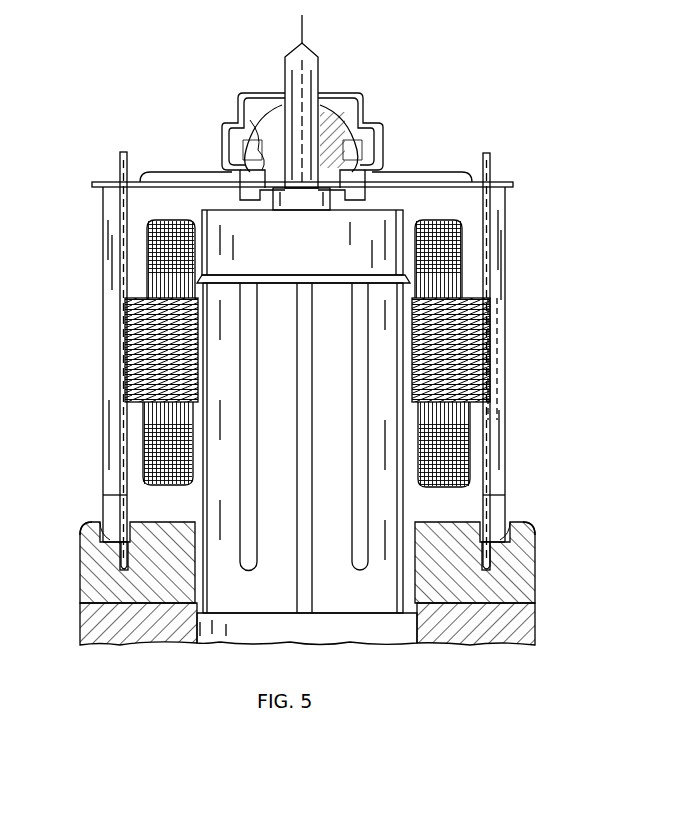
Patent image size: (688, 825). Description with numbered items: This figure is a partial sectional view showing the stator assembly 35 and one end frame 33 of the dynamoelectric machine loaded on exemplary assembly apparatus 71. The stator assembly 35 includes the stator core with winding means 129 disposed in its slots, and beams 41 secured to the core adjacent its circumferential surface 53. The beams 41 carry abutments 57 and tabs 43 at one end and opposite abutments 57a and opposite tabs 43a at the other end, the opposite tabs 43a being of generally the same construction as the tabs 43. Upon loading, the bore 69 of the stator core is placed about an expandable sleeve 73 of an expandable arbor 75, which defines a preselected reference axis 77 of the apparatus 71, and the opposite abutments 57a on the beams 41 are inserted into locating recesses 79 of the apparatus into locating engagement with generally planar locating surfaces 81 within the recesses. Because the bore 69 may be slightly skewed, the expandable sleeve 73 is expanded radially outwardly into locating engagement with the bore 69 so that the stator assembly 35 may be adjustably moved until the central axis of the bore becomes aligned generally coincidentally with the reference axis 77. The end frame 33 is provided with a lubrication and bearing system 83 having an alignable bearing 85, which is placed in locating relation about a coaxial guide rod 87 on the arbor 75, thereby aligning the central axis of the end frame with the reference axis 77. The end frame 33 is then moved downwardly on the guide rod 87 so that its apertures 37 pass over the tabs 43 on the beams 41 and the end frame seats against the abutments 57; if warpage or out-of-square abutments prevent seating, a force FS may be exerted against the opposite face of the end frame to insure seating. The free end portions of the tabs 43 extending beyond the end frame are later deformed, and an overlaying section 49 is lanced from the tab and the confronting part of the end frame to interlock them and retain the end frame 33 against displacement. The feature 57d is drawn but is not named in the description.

The end frame 33 is at (414, 130).
The stator assembly 35 is at (513, 403).
The apertures 37 is at (118, 187).
The beams 41 is at (103, 320).
The tabs 43 is at (121, 165).
The tabs 43a is at (126, 566).
The overlaying section 49 is at (493, 320).
The circumferential surface 53 is at (492, 367).
The abutments 57 is at (126, 185).
The opposite abutments 57a is at (512, 527).
The flange foot 57d is at (90, 527).
The bore 69 is at (412, 355).
The apparatus 71 is at (397, 650).
The expandable sleeve 73 is at (343, 453).
The expandable arbor 75 is at (246, 616).
The reference axis 77 is at (302, 30).
The locating recesses 79 is at (100, 530).
The locating surfaces 81 is at (110, 545).
The lubrication and bearing system 83 is at (232, 111).
The alignable bearing 85 is at (344, 122).
The coaxial guide rod 87 is at (319, 70).
The winding means 129 is at (146, 258).
The force arrow FS is at (188, 171).